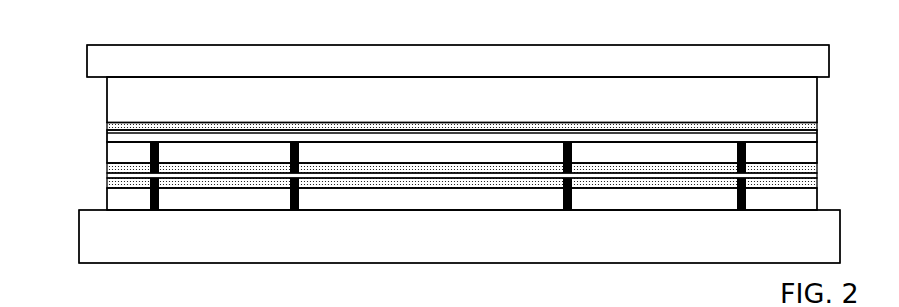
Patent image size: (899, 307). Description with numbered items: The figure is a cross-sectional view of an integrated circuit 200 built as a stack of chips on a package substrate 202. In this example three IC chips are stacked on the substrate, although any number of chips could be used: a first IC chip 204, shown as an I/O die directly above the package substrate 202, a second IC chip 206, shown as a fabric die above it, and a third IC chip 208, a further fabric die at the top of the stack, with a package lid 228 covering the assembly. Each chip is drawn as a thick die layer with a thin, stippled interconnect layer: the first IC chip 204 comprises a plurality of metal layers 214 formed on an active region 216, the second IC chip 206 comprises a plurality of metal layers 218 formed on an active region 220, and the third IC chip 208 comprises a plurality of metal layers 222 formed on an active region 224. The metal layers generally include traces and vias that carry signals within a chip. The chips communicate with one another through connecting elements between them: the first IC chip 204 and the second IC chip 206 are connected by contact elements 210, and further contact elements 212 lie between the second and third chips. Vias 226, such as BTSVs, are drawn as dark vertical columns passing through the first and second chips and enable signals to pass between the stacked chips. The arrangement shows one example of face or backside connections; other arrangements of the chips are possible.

The integrated circuit 200 is at (48, 245).
The package substrate 202 is at (79, 248).
The first IC chip 204 is at (823, 198).
The second IC chip 206 is at (823, 153).
The third IC chip 208 is at (832, 102).
The contact elements 210 is at (817, 175).
The contact elements 212 is at (817, 137).
The metal layers 214 is at (107, 200).
The active region 216 is at (107, 182).
The metal layers 218 is at (107, 145).
The active region 220 is at (107, 165).
The metal layers 222 is at (107, 108).
The active region 224 is at (107, 128).
The vias 226 is at (152, 211).
The package lid 228 is at (87, 63).